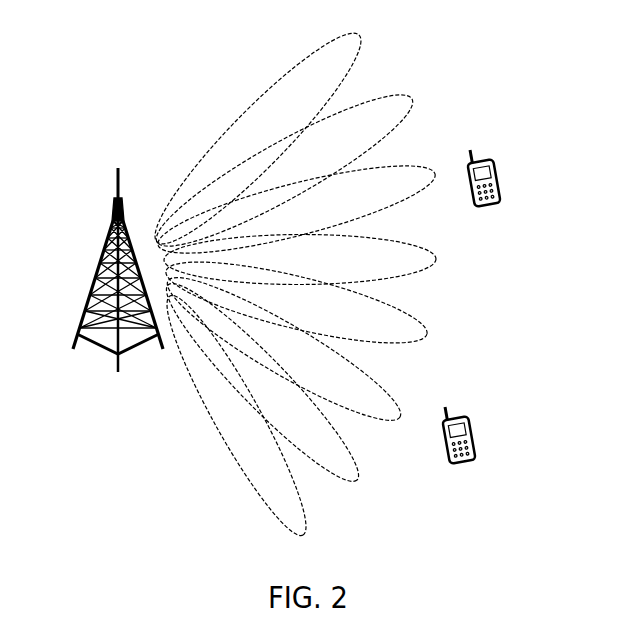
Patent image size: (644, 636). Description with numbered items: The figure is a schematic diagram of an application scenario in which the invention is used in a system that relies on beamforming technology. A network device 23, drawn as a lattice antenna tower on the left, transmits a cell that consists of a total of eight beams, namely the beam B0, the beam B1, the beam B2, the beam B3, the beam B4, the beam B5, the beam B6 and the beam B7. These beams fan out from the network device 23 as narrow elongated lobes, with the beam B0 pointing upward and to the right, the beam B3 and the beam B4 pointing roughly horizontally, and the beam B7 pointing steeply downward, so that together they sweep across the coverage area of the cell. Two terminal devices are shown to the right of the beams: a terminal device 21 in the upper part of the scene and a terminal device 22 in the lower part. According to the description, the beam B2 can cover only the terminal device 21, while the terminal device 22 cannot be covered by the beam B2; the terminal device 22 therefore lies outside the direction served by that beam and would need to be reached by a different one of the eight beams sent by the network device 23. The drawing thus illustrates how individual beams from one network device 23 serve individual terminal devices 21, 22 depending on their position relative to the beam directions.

The terminal device 21 is at (531, 144).
The terminal device 22 is at (511, 406).
The network device 23 is at (91, 334).
The beam B0 is at (258, 138).
The beam B1 is at (284, 171).
The beam B2 is at (297, 209).
The beam B3 is at (300, 259).
The beam B4 is at (296, 303).
The beam B5 is at (283, 348).
The beam B6 is at (262, 382).
The beam B7 is at (236, 415).